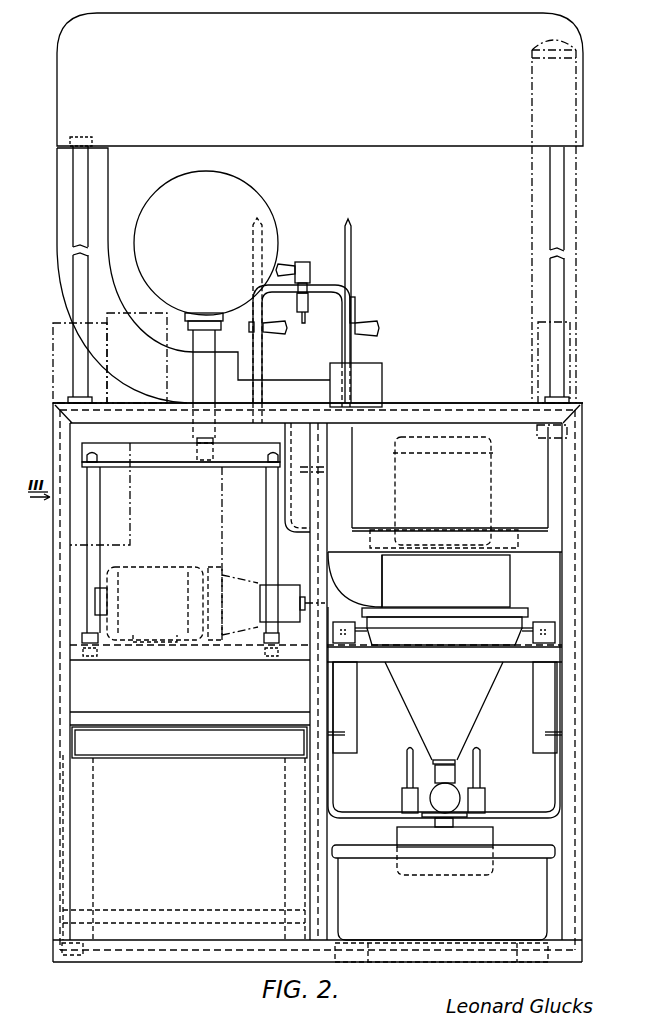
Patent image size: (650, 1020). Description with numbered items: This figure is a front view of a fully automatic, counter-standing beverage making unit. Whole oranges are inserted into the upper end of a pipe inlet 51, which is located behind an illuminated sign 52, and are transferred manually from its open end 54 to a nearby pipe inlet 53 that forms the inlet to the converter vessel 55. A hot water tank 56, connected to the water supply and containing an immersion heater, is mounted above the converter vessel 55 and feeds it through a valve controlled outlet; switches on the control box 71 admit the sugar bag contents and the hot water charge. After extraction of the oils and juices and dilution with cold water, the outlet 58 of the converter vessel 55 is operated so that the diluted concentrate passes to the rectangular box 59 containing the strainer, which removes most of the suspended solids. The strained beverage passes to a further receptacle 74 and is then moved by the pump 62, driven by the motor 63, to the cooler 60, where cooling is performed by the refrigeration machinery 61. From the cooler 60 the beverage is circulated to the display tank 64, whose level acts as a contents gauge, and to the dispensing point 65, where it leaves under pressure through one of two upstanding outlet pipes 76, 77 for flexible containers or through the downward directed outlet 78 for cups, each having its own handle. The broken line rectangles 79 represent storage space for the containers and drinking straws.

The pipe inlet 51 is at (57, 208).
The illuminated sign 52 is at (68, 48).
The pipe inlet 53 is at (382, 376).
The open end 54 is at (295, 374).
The converter vessel 55 is at (475, 696).
The hot water tank 56 is at (538, 490).
The outlet 58 is at (451, 776).
The rectangular box 59 is at (487, 839).
The cooler 60 is at (140, 519).
The refrigeration machinery 61 is at (100, 832).
The pump 62 is at (238, 585).
The motor 63 is at (152, 580).
The display tank 64 is at (255, 200).
The dispensing point 65 is at (364, 309).
The control box 71 is at (75, 428).
The receptacle 74 is at (545, 903).
The upstanding outlet pipe 76 is at (263, 237).
The upstanding outlet pipe 77 is at (351, 240).
The downward directed outlet 78 is at (305, 313).
The storage space 79 is at (66, 328).